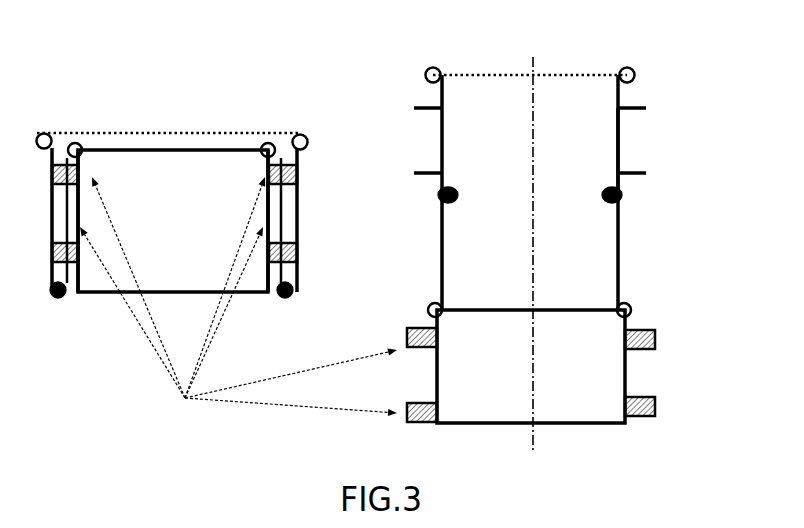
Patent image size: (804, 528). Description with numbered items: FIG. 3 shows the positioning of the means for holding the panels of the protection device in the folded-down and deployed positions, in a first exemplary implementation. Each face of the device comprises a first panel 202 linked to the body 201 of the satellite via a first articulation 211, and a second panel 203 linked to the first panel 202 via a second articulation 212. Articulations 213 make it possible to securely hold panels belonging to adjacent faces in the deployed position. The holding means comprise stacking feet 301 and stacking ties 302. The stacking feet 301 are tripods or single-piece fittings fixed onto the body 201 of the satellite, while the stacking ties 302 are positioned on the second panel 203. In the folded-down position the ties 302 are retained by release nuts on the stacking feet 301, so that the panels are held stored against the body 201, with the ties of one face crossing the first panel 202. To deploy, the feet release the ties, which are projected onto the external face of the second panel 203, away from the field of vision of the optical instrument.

The body of the satellite 201 is at (575, 408).
The first panel 202 is at (620, 263).
The second panel 203 is at (620, 178).
The first articulation 211 is at (265, 135).
The second articulation 212 is at (295, 296).
The articulations 213 is at (307, 143).
The stacking feet 301 is at (238, 303).
The stacking ties 302 is at (632, 108).